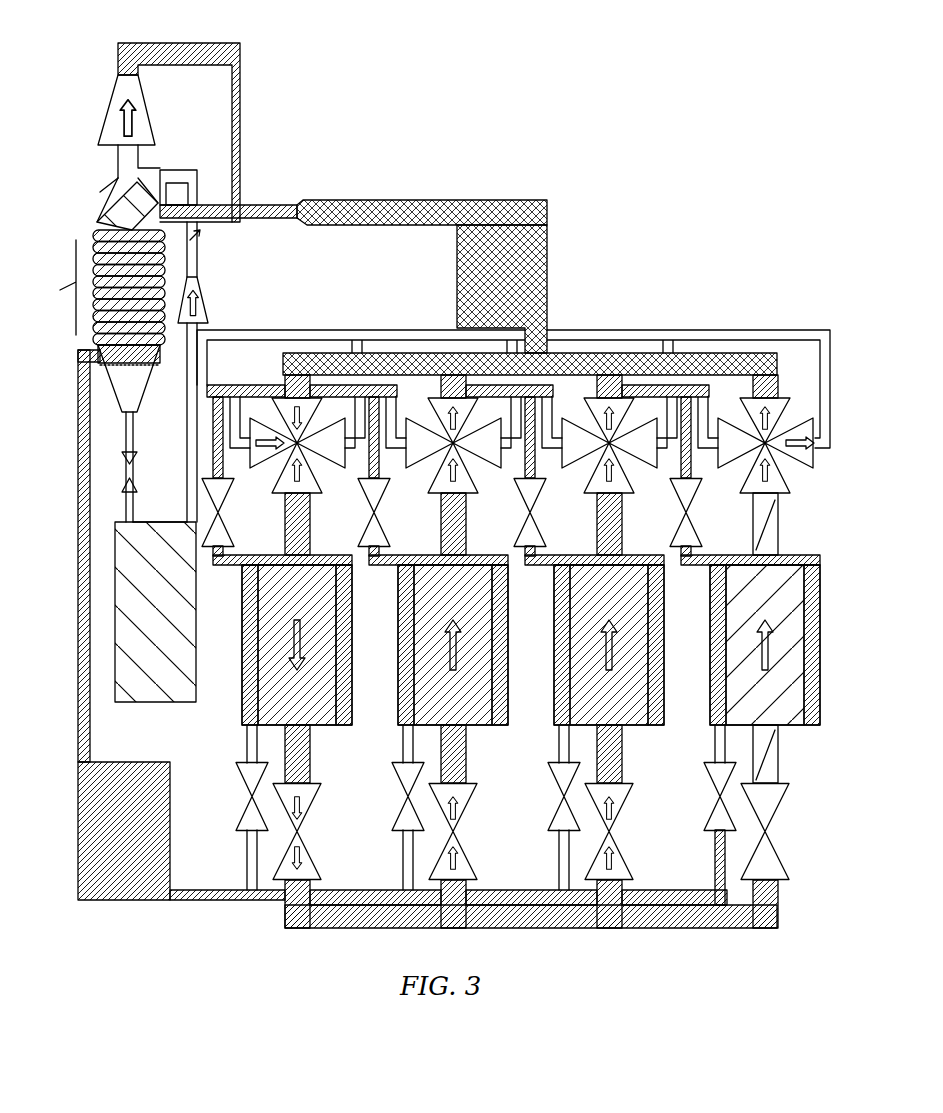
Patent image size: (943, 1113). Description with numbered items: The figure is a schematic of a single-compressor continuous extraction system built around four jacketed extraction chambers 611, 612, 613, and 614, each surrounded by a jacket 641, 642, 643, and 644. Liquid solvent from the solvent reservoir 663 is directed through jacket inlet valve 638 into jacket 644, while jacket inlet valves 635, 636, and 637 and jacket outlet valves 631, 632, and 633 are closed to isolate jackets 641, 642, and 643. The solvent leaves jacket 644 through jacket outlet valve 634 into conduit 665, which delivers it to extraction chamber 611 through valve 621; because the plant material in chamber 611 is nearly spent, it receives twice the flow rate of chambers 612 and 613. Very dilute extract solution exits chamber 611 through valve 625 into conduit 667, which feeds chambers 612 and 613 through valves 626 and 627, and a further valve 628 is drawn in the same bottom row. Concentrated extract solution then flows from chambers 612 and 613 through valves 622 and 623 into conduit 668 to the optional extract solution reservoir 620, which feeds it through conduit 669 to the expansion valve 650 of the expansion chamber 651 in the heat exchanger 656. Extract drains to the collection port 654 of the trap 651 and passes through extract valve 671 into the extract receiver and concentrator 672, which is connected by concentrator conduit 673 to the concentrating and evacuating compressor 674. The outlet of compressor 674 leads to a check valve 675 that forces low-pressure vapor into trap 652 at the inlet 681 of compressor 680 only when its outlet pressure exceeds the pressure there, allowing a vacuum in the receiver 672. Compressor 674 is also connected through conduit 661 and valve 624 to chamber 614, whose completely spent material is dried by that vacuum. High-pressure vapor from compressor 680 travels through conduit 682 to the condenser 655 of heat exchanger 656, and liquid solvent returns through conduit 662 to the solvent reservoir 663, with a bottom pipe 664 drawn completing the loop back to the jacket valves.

The jacketed extraction chamber 611 is at (327, 580).
The jacketed extraction chamber 612 is at (483, 580).
The jacketed extraction chamber 613 is at (639, 580).
The jacketed extraction chamber 614 is at (800, 580).
The extract solution reservoir 620 is at (548, 305).
The valve 621 is at (305, 473).
The valve 622 is at (461, 473).
The valve 623 is at (617, 473).
The valve 624 is at (773, 473).
The valve 625 is at (302, 790).
The valve 626 is at (458, 790).
The valve 627 is at (614, 790).
The fourth outlet valve 628 is at (772, 790).
The jacket outlet valve 631 is at (224, 492).
The jacket outlet valve 632 is at (380, 492).
The jacket outlet valve 633 is at (536, 492).
The jacket outlet valve 634 is at (692, 492).
The jacket inlet valve 635 is at (243, 825).
The jacket inlet valve 636 is at (399, 825).
The jacket inlet valve 637 is at (555, 825).
The jacket inlet valve 638 is at (711, 825).
The jacket 641 is at (245, 677).
The jacket 642 is at (401, 680).
The jacket 643 is at (557, 677).
The jacket 644 is at (713, 680).
The expansion valve 650 is at (176, 182).
The expansion chamber 651 is at (97, 222).
The trap 652 is at (100, 192).
The collection port 654 is at (95, 372).
The condenser 655 is at (93, 240).
The heat exchanger 656 is at (44, 287).
The conduit 661 is at (670, 330).
The conduit 662 is at (78, 660).
The solvent reservoir 663 is at (170, 835).
The bottom pipe 664 is at (192, 900).
The conduit 665 is at (213, 387).
The conduit 667 is at (777, 920).
The conduit 668 is at (435, 330).
The conduit 669 is at (305, 200).
The extract valve 671 is at (134, 488).
The extract receiver and concentrator 672 is at (196, 592).
The concentrator conduit 673 is at (188, 408).
The concentrating and evacuating compressor 674 is at (208, 312).
The check valve 675 is at (200, 240).
The compressor 680 is at (108, 130).
The inlet 681 is at (118, 170).
The conduit 682 is at (228, 45).